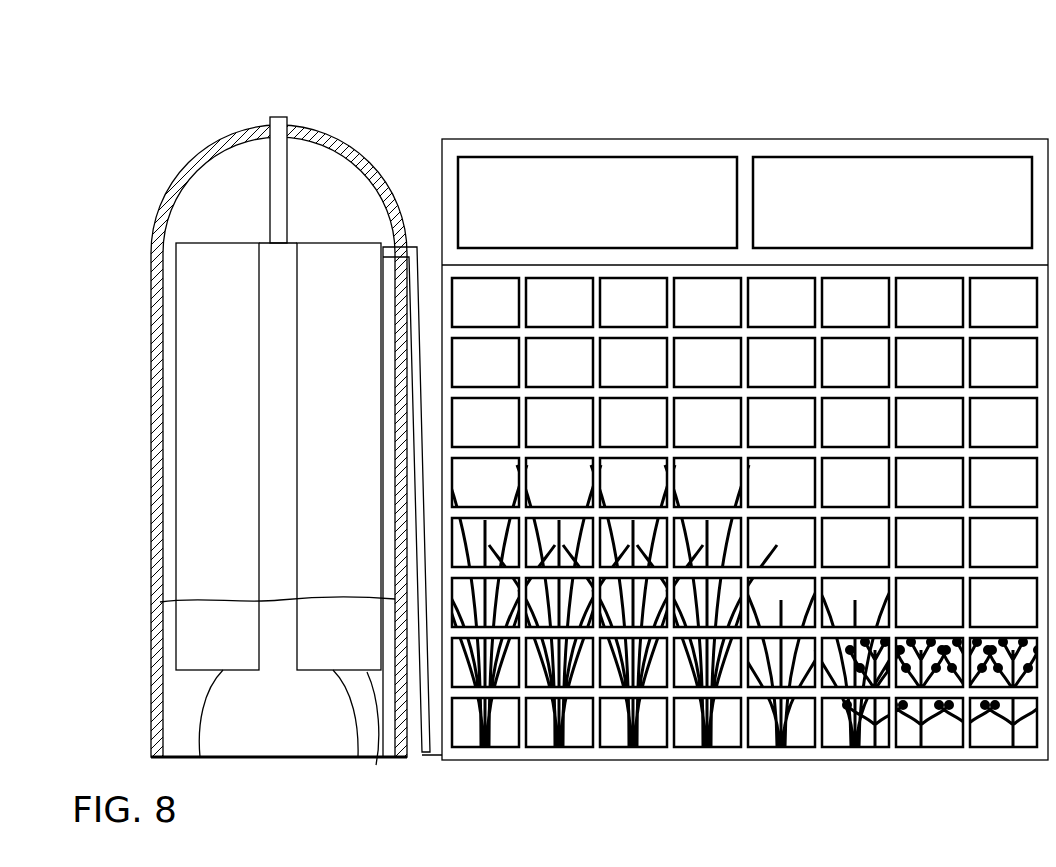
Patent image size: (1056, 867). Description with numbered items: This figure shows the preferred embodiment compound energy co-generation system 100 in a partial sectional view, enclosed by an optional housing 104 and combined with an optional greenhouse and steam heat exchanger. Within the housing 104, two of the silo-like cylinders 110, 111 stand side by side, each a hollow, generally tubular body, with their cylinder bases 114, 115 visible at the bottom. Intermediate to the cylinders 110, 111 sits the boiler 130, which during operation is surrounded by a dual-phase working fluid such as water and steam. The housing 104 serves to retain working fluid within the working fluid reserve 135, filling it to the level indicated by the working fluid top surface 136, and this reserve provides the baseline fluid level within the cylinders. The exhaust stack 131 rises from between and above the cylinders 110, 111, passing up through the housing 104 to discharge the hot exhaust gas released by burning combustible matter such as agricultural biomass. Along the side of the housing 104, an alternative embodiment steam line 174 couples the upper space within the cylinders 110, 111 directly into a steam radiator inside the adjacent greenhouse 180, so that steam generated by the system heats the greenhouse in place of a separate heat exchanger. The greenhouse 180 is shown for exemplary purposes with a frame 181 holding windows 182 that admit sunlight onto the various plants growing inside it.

The compound energy co-generation system 100 is at (150, 106).
The housing 104 is at (152, 217).
The exhaust stack 131 is at (283, 127).
The cylinder 110 is at (235, 359).
The cylinder 111 is at (361, 372).
The boiler 130 is at (304, 728).
The cylinder base 115 is at (376, 765).
The working fluid top surface 136 is at (160, 602).
The cylinder base 114 is at (192, 681).
The working fluid reserve 135 is at (173, 707).
The steam line 174 is at (428, 757).
The greenhouse 180 is at (708, 133).
The frame 181 is at (932, 146).
The windows 182 is at (805, 170).